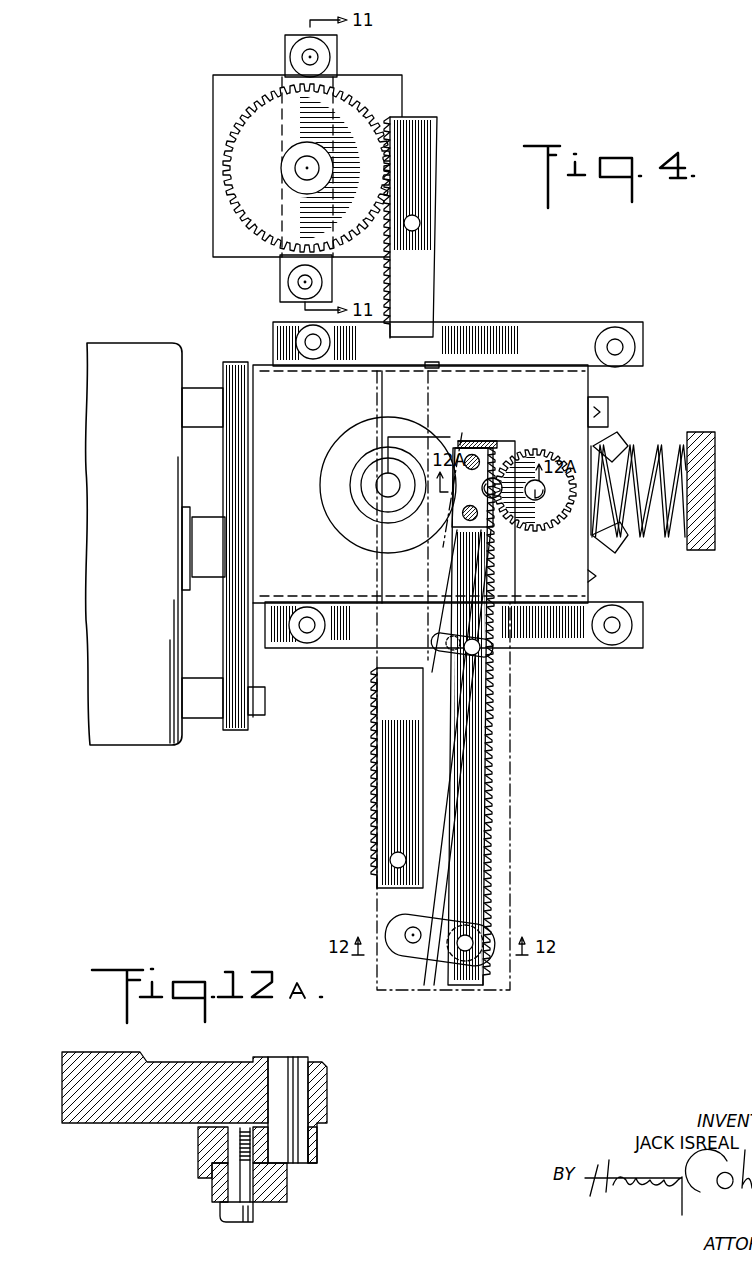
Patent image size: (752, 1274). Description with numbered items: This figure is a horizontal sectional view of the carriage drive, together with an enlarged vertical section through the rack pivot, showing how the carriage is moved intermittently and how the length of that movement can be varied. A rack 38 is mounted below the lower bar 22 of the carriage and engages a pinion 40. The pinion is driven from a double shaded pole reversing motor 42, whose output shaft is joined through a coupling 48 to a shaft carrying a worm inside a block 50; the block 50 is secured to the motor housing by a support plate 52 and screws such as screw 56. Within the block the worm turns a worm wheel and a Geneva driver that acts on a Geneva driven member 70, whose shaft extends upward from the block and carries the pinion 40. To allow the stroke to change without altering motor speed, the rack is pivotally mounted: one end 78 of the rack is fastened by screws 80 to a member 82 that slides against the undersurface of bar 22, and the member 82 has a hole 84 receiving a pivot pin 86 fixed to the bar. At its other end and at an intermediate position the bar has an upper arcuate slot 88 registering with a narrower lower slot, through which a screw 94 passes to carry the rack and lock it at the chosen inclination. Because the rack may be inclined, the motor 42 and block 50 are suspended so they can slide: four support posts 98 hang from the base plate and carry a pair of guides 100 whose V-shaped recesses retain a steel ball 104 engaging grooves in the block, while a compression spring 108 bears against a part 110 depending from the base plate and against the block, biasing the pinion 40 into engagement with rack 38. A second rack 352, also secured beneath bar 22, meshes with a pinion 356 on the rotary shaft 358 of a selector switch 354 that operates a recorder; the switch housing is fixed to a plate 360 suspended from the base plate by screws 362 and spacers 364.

In FIG. 4, the lower bar 22 is at (512, 882).
In FIG. 12A, the lower bar 22 is at (62, 1110).
In FIG. 4, the rack 38 is at (491, 842).
In FIG. 12A, the rack 38 is at (212, 1193).
In FIG. 4, the pinion 40 is at (543, 529).
In FIG. 4, the double shaded pole reversing motor 42 is at (130, 550).
In FIG. 4, the coupling 48 is at (206, 522).
In FIG. 4, the block 50 is at (590, 588).
In FIG. 4, the support plate 52 is at (238, 731).
In FIG. 4, the screw 56 is at (609, 401).
In FIG. 4, the Geneva driven member 70 is at (627, 543).
In FIG. 4, the end of the rack 78 is at (458, 447).
In FIG. 4, the screws 80 is at (462, 530).
In FIG. 12A, the screws 80 is at (253, 1213).
In FIG. 4, the member 82 is at (480, 442).
In FIG. 12A, the member 82 is at (198, 1152).
In FIG. 12A, the hole 84 is at (310, 1145).
In FIG. 4, the pivot pin 86 is at (483, 488).
In FIG. 12A, the pivot pin 86 is at (307, 1060).
In FIG. 4, the upper arcuate slot 88 is at (452, 668).
In FIG. 4, the screw 94 is at (487, 657).
In FIG. 4, the support posts 98 is at (622, 340).
In FIG. 4, the guides 100 is at (541, 318).
In FIG. 4, the steel ball 104 is at (432, 366).
In FIG. 4, the compression spring 108 is at (656, 446).
In FIG. 4, the part 110 is at (700, 550).
In FIG. 4, the rack 352 is at (438, 152).
In FIG. 4, the selector switch 354 is at (213, 160).
In FIG. 4, the pinion 356 is at (362, 118).
In FIG. 4, the rotary shaft 358 is at (300, 160).
In FIG. 4, the plate 360 is at (280, 278).
In FIG. 4, the screws 362 is at (302, 53).
In FIG. 4, the spacers 364 is at (330, 57).